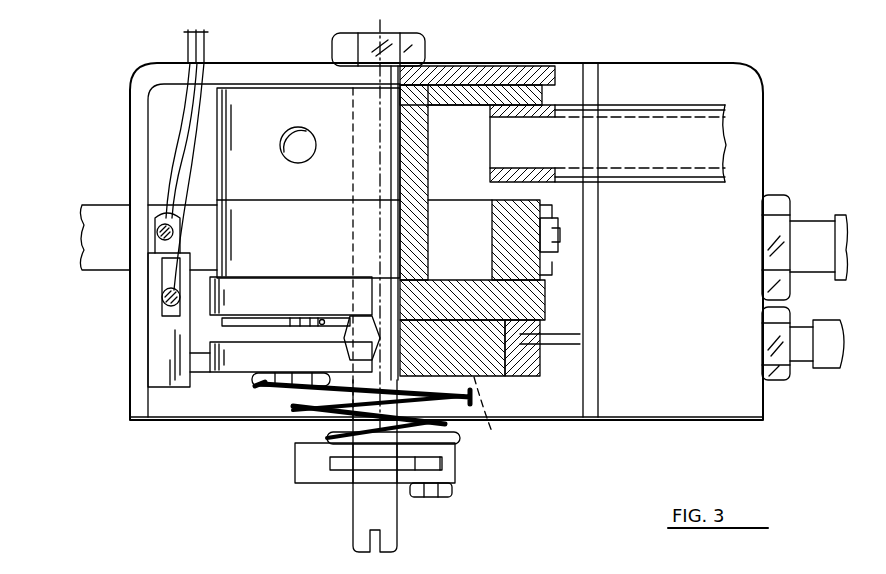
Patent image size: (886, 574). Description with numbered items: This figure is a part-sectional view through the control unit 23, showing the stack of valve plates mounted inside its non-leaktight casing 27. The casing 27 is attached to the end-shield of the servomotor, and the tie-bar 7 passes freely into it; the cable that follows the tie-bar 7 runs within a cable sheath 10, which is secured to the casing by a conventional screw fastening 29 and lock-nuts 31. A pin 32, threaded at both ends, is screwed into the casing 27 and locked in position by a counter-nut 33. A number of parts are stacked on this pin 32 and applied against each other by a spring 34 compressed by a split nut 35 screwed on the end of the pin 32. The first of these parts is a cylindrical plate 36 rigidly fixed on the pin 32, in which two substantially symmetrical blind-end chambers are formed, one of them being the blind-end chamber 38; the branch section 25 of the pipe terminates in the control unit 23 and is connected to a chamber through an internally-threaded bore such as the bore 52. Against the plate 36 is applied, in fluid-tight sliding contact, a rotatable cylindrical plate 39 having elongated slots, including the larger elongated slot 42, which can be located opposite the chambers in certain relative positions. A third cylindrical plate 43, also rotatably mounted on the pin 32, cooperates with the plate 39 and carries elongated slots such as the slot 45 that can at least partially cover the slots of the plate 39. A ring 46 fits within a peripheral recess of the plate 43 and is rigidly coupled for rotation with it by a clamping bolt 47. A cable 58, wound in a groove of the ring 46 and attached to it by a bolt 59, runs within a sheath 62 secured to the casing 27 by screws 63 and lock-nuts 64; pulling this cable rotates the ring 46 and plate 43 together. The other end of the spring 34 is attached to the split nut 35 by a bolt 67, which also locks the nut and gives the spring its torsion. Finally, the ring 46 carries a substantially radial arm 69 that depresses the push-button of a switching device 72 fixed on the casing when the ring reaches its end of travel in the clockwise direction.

The tie-bar 7 is at (105, 212).
The cable sheath 10 is at (842, 214).
The control unit 23 is at (772, 94).
The branch section 25 is at (690, 134).
The casing 27 is at (141, 128).
The screw fastening 29 is at (804, 226).
The lock-nuts 31 is at (780, 200).
The pin 32 is at (362, 515).
The counter-nut 33 is at (426, 50).
The spring 34 is at (300, 412).
The split nut 35 is at (300, 468).
The cylindrical plate 36 is at (206, 100).
The blind-end chamber 38 is at (467, 118).
The cylindrical plate 39 is at (556, 218).
The elongated slot 42 is at (470, 247).
The cylindrical plate 43 is at (550, 308).
The elongated slot 45 is at (491, 418).
The ring 46 is at (527, 378).
The clamping bolt 47 is at (356, 330).
The internally-threaded bore 52 is at (286, 130).
The cable 58 is at (250, 330).
The bolt 59 is at (282, 387).
The sheath 62 is at (830, 362).
The screws 63 is at (800, 342).
The lock-nuts 64 is at (776, 378).
The bolt 67 is at (432, 498).
The radial arm 69 is at (200, 378).
The switching device 72 is at (160, 336).